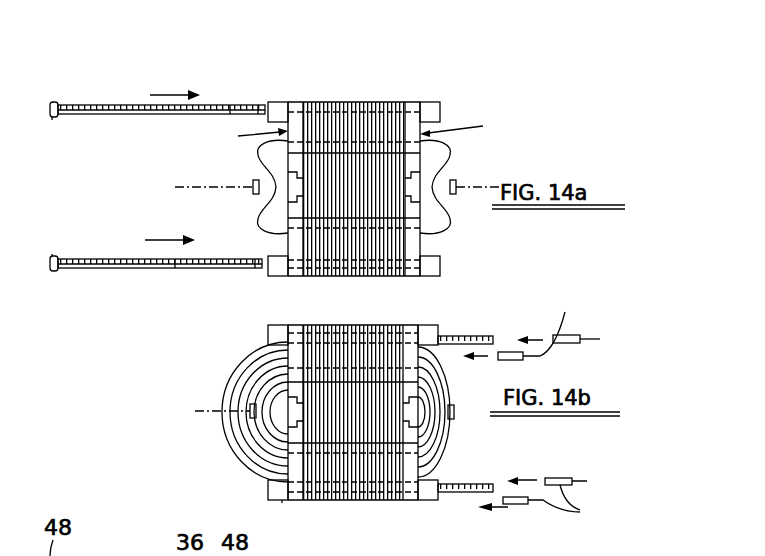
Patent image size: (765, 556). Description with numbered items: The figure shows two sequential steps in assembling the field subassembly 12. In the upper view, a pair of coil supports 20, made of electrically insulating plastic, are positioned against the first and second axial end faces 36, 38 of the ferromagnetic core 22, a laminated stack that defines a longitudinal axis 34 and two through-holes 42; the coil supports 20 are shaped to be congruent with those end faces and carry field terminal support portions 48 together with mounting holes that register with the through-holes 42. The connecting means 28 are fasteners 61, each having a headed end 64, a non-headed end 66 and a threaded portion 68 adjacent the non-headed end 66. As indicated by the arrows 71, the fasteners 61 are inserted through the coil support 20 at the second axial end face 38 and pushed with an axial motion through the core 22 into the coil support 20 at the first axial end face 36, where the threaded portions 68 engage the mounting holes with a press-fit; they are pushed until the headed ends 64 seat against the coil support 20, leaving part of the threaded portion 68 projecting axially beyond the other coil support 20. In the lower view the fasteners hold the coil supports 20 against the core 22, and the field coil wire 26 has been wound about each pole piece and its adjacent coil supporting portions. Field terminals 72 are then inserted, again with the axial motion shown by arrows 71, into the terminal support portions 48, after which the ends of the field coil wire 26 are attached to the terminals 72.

In FIG. 14A, the field subassembly 12 is at (418, 68).
In FIG. 14A, the coil supports 20 is at (357, 132).
In FIG. 14A, the ferromagnetic core 22 is at (390, 245).
In FIG. 14B, the ferromagnetic core 22 is at (323, 356).
In FIG. 14B, the field coil wire 26 is at (258, 455).
In FIG. 14A, the connecting means 28 is at (53, 97).
In FIG. 14A, the longitudinal axis 34 is at (175, 187).
In FIG. 14B, the longitudinal axis 34 is at (205, 410).
In FIG. 14A, the first axial end face 36 is at (405, 102).
In FIG. 14B, the first axial end face 36 is at (398, 503).
In FIG. 14A, the second axial end face 38 is at (305, 102).
In FIG. 14B, the second axial end face 38 is at (301, 503).
In FIG. 14A, the through-holes 42 is at (378, 105).
In FIG. 14B, the through-holes 42 is at (350, 333).
In FIG. 14A, the field terminal support portions 48 is at (278, 112).
In FIG. 14B, the field terminal support portions 48 is at (277, 333).
In FIG. 14A, the fastener 61 is at (116, 104).
In FIG. 14A, the headed end 64 is at (53, 120).
In FIG. 14B, the headed end 64 is at (280, 502).
In FIG. 14A, the non-headed end 66 is at (266, 102).
In FIG. 14B, the non-headed end 66 is at (495, 342).
In FIG. 14A, the threaded portion 68 is at (238, 104).
In FIG. 14A, the arrows 71 is at (190, 86).
In FIG. 14B, the arrows 71 is at (515, 478).
In FIG. 14B, the field terminal 72 is at (555, 335).